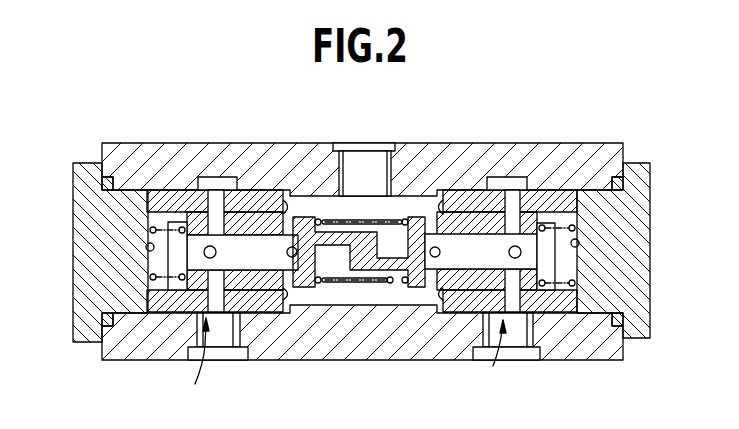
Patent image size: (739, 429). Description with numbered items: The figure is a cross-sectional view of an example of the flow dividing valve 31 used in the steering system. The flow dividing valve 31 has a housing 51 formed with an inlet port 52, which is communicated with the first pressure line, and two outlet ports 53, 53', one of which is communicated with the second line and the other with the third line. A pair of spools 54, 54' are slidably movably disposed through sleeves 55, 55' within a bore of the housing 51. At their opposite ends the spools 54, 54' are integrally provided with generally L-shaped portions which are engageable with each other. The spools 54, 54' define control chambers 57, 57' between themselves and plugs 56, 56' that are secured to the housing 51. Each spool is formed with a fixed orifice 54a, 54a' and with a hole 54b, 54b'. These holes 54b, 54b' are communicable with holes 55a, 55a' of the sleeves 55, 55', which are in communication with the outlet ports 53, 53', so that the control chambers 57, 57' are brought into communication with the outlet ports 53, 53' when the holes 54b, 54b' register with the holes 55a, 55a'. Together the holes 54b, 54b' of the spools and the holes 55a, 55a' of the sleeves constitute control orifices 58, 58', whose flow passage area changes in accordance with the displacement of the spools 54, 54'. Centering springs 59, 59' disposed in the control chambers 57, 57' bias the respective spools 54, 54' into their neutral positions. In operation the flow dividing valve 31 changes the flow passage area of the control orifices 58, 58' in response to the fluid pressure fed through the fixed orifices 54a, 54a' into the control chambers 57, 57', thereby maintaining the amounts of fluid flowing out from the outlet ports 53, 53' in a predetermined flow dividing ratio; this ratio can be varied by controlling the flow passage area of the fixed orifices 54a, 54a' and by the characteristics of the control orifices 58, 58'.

The flow dividing valve 31 is at (511, 108).
The housing 51 is at (567, 153).
The inlet port 52 is at (343, 163).
The outlet port 53 is at (200, 357).
The outlet port 53' is at (512, 360).
The spool 54 is at (222, 306).
The spool 54' is at (482, 303).
The fixed orifice 54a is at (218, 163).
The fixed orifice 54a' is at (478, 161).
The hole 54b is at (242, 253).
The hole 54b' is at (481, 252).
The sleeve 55 is at (202, 191).
The sleeve 55' is at (487, 190).
The hole 55a is at (230, 335).
The hole 55a' is at (477, 338).
The plug 56 is at (93, 274).
The plug 56' is at (637, 250).
The control chamber 57 is at (94, 234).
The control chamber 57' is at (634, 230).
The control orifice 58 is at (196, 365).
The control orifice 58' is at (501, 356).
The centering spring 59 is at (151, 311).
The centering spring 59' is at (568, 309).